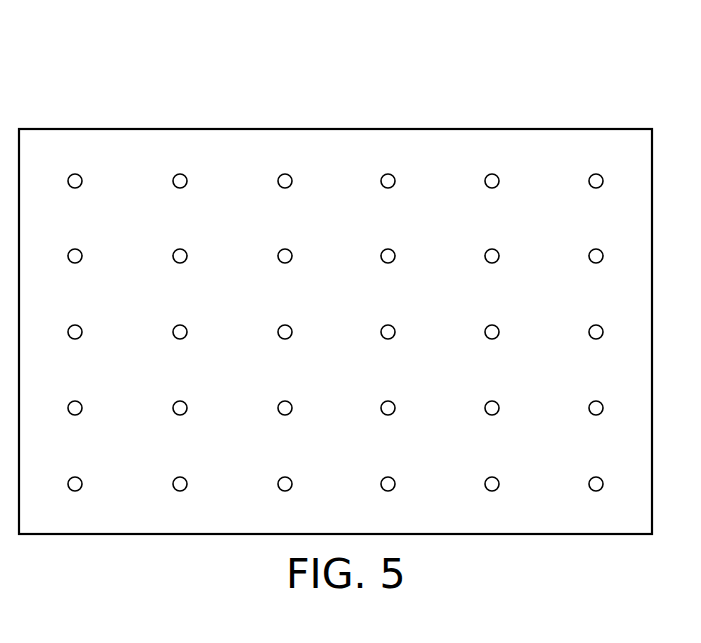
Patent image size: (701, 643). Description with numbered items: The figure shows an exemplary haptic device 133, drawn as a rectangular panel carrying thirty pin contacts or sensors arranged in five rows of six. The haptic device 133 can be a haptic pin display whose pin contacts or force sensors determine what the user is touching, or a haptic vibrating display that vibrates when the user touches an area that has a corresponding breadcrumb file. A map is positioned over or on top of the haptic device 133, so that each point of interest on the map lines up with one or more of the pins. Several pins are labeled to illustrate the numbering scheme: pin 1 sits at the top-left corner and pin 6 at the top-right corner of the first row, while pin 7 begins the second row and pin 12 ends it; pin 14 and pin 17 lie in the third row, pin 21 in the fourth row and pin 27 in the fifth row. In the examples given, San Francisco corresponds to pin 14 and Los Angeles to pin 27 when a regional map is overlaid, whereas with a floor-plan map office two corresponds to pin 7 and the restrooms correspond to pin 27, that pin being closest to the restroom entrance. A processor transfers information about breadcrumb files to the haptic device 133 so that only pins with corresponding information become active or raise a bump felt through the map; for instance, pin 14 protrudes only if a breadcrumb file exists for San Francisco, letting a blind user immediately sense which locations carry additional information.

The haptic device 133 is at (542, 85).
The pin 1 is at (80, 176).
The pin 6 is at (601, 176).
The pin 7 is at (80, 251).
The pin 12 is at (601, 251).
The pin 14 is at (185, 327).
The pin 17 is at (497, 327).
The pin 21 is at (290, 403).
The pin 27 is at (290, 479).